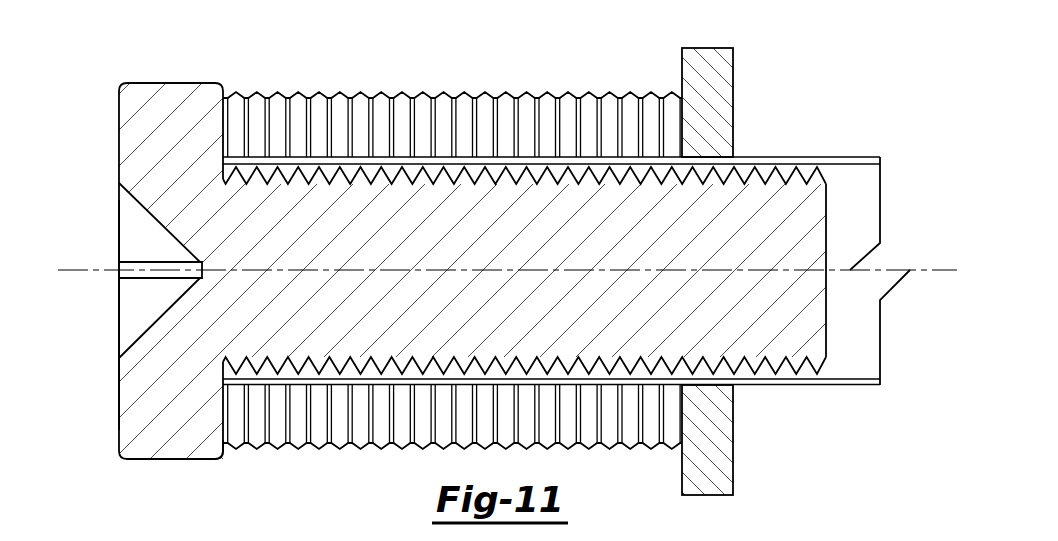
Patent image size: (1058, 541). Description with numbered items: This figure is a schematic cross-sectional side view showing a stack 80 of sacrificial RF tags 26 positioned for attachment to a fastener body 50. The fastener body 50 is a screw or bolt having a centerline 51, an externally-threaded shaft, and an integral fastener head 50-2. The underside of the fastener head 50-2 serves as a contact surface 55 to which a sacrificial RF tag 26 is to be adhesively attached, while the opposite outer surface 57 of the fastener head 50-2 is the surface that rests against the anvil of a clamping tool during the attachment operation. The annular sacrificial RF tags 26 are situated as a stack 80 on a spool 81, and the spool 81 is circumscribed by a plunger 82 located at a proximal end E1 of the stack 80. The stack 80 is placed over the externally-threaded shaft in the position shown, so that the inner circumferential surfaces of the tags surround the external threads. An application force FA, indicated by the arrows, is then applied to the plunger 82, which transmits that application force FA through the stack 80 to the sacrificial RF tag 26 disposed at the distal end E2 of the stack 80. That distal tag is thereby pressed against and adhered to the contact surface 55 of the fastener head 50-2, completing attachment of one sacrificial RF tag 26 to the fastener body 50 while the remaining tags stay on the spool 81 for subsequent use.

The fastener body 50 is at (529, 268).
The fastener head 50-2 is at (177, 445).
The centerline 51 is at (80, 266).
The outer surface 57 is at (118, 427).
The contact surface 55 is at (223, 455).
The sacrificial RF tag 26 is at (447, 117).
The stack 80 is at (573, 234).
The spool 81 is at (875, 160).
The plunger 82 is at (727, 61).
The proximal end E1 is at (661, 52).
The distal end E2 is at (246, 66).
The application force FA is at (735, 93).